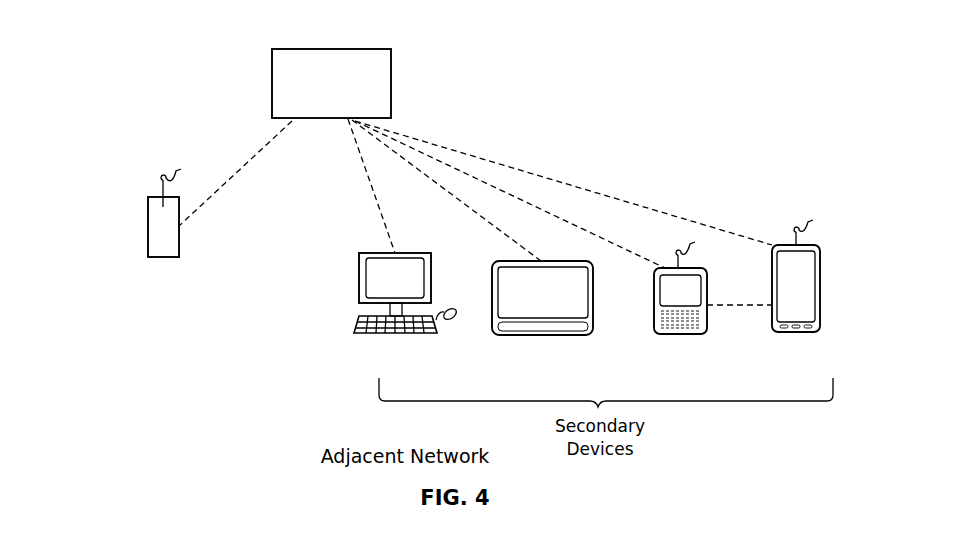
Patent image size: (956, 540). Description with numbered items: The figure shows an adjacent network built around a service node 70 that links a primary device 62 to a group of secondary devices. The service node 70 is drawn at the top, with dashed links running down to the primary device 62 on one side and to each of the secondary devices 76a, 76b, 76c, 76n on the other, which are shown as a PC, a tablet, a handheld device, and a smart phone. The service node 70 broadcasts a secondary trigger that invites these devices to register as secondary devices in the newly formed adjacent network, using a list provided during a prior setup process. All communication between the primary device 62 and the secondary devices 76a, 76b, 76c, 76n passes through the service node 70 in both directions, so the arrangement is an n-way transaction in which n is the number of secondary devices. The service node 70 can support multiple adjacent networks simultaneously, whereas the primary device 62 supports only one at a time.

The service node 70 is at (331, 49).
The primary device 62 is at (148, 228).
The secondary device 76a is at (359, 296).
The secondary device 76b is at (492, 297).
The secondary device 76c is at (654, 298).
The secondary device 76n is at (772, 297).